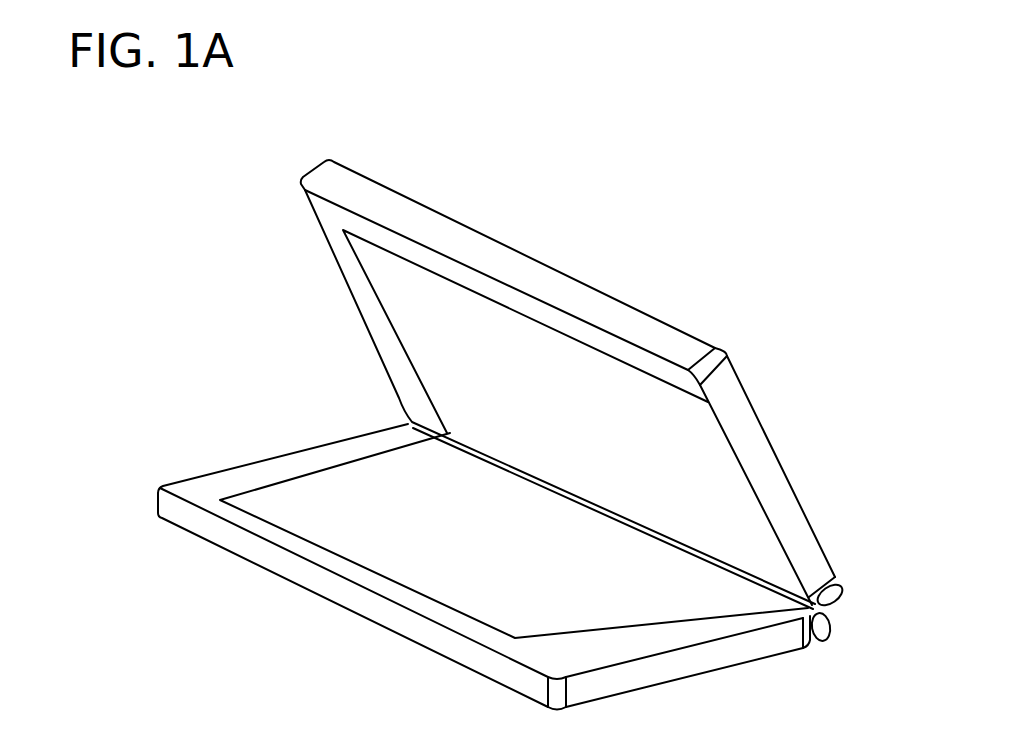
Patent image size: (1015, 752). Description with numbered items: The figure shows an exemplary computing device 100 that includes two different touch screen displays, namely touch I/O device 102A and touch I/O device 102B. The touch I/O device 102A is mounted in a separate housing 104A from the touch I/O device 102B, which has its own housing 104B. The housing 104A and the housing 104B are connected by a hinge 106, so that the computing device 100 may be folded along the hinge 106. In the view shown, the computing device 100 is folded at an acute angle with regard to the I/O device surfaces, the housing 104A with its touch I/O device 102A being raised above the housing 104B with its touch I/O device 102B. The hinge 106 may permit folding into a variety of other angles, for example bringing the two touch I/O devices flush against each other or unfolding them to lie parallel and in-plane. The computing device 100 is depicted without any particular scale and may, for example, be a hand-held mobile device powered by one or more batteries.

The computing device 100 is at (469, 128).
The touch I/O device 102A is at (385, 303).
The touch I/O device 102B is at (305, 493).
The housing 104A is at (345, 218).
The housing 104B is at (218, 483).
The hinge 106 is at (832, 612).